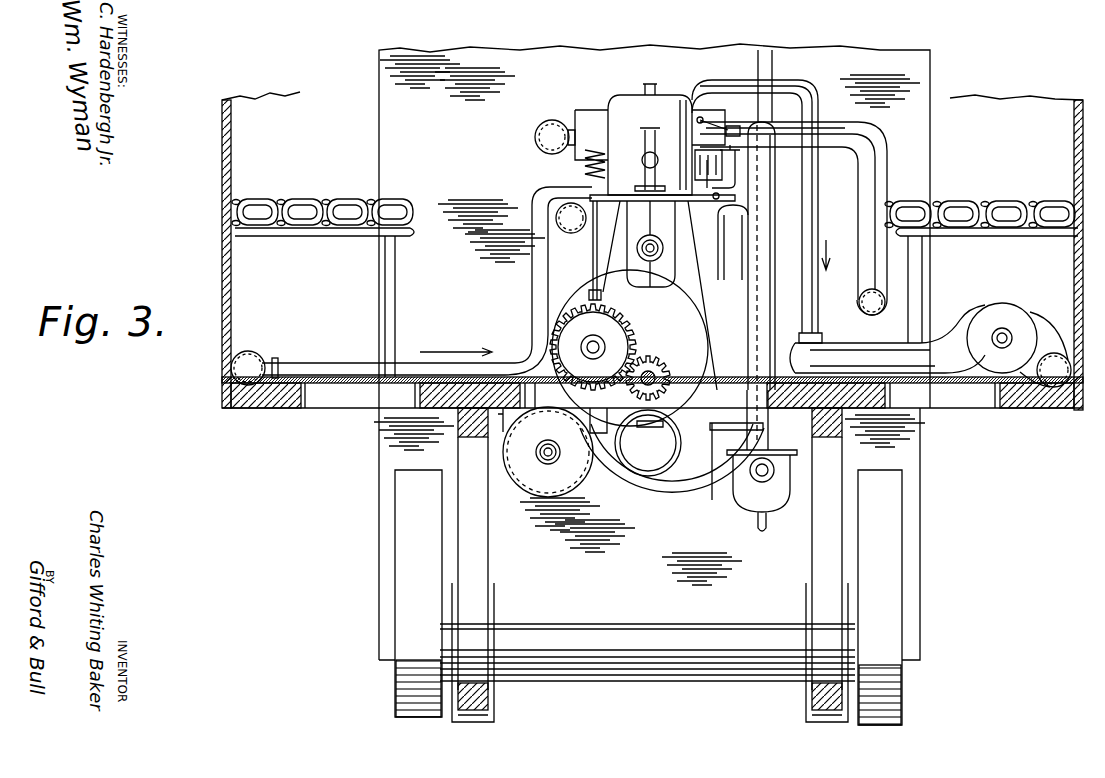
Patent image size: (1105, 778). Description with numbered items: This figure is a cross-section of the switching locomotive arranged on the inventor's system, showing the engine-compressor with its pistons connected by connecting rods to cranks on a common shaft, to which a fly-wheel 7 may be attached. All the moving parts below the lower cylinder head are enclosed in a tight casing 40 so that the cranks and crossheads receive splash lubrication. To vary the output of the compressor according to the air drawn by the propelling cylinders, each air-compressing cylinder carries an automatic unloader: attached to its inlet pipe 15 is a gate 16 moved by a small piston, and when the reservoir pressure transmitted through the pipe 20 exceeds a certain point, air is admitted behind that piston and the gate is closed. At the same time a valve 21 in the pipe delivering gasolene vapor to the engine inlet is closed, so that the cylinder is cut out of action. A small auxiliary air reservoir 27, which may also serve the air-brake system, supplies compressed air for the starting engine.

The fly-wheel 7 is at (658, 381).
The inlet pipe 15 is at (733, 242).
The gate 16 is at (708, 212).
The pipe 20 is at (729, 173).
The valve 21 is at (726, 116).
The auxiliary air reservoir 27 is at (552, 452).
The casing 40 is at (616, 352).